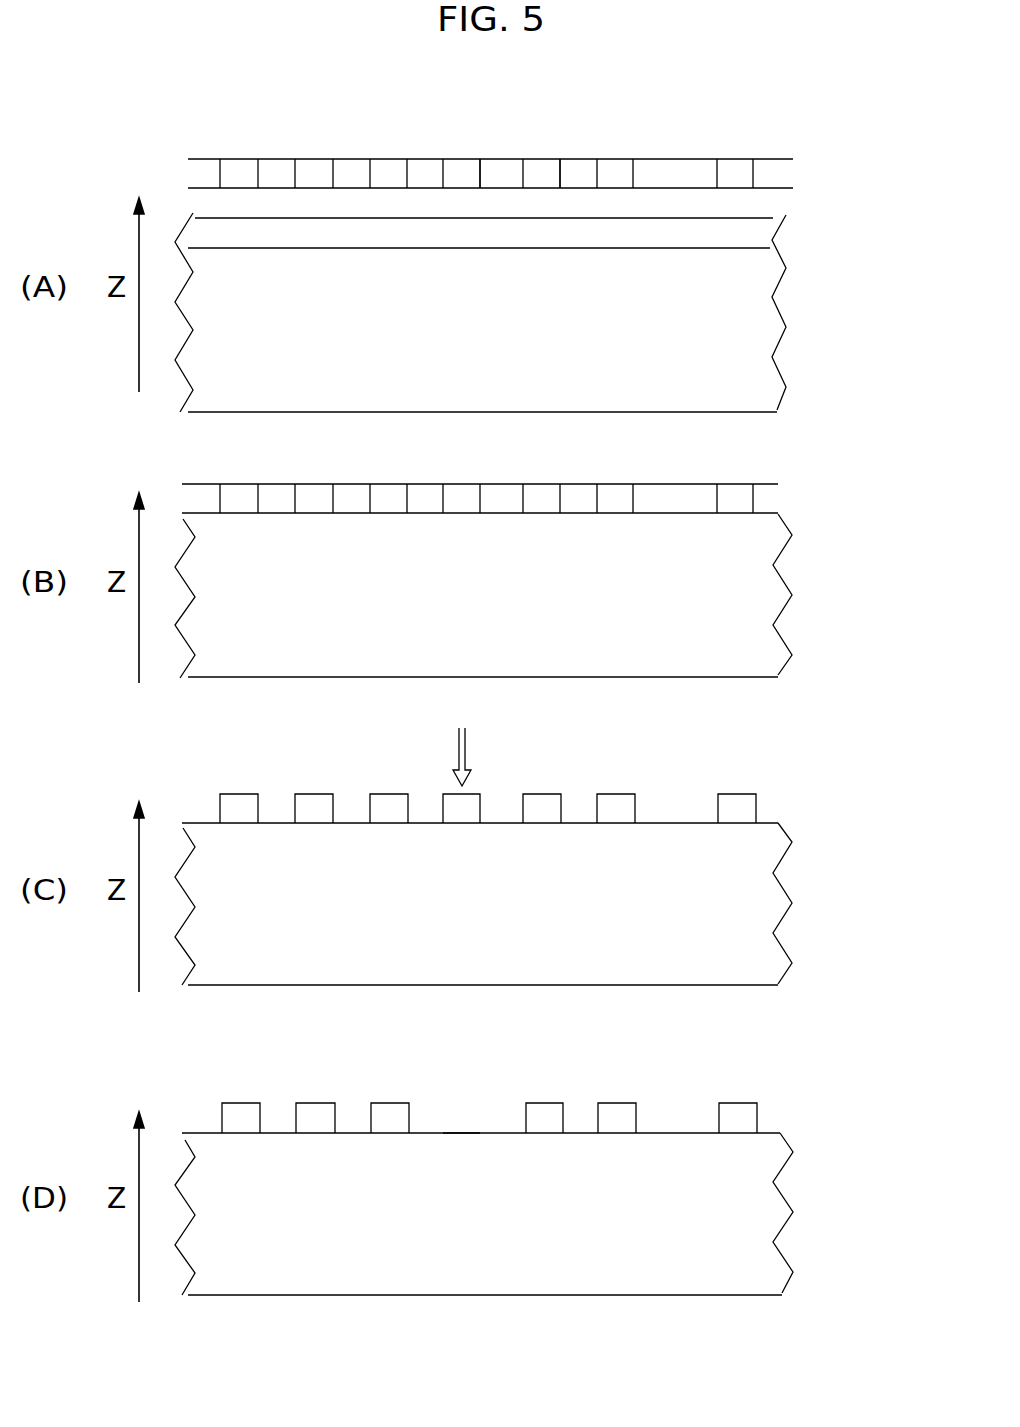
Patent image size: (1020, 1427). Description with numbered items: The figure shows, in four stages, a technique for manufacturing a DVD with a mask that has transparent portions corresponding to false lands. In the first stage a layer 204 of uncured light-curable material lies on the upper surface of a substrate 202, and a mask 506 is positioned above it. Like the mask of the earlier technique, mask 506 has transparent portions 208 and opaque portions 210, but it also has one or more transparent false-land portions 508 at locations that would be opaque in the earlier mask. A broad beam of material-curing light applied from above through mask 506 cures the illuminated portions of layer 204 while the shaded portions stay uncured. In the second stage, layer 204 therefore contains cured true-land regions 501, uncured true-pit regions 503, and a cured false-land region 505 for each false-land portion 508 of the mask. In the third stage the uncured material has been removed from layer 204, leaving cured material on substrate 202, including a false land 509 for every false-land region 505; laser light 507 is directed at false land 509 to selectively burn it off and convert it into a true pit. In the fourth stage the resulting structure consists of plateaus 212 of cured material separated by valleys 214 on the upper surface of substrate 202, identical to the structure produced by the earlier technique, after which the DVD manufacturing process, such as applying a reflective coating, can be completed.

The substrate 202 is at (808, 335).
The layer of light-curable material 204 is at (532, 679).
The transparent portion 208 is at (542, 136).
The opaque portion 210 is at (349, 136).
The plateau 212 is at (390, 1083).
The valley 214 is at (463, 1111).
The cured true-land region 501 is at (543, 537).
The uncured true-pit region 503 is at (353, 537).
The cured false-land region 505 is at (463, 537).
The mask 506 is at (532, 129).
The laser light 507 is at (481, 748).
The transparent false-land portion 508 is at (460, 136).
The false land 509 is at (463, 846).